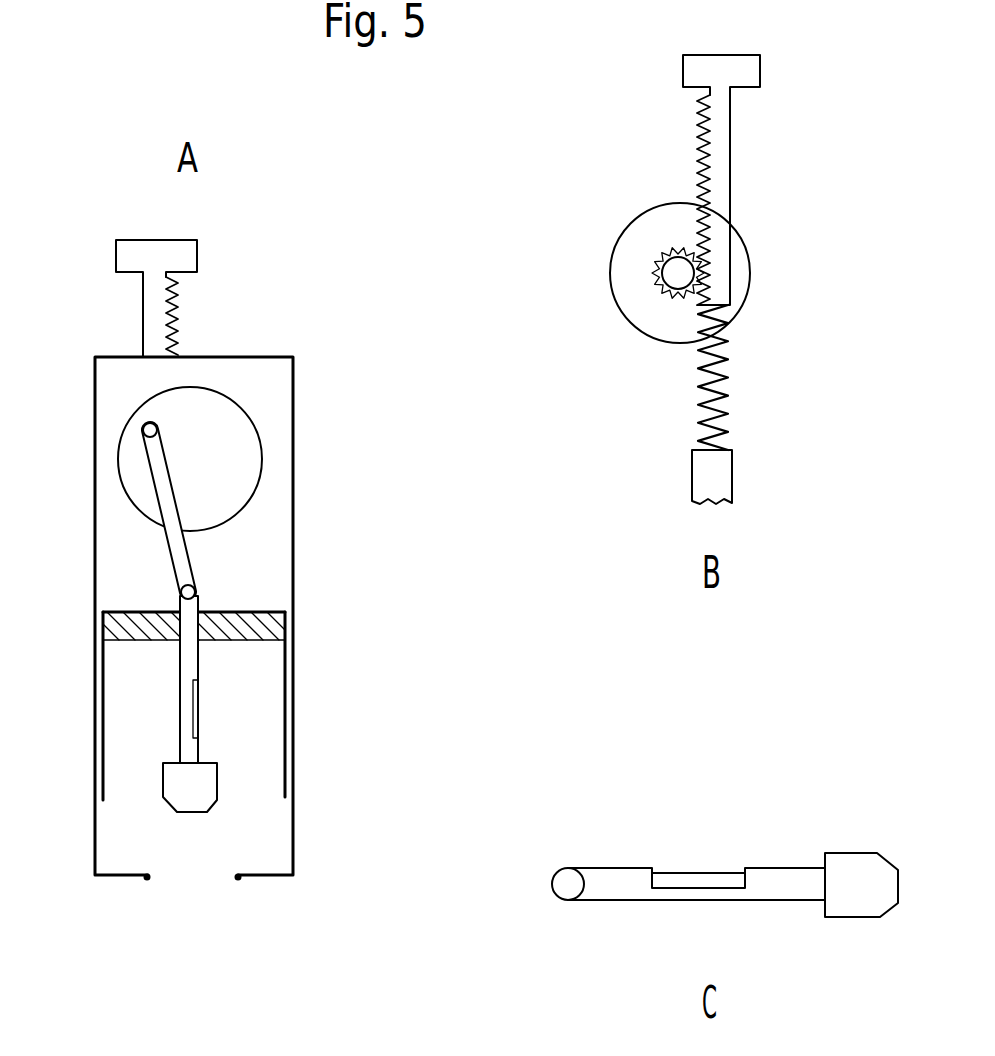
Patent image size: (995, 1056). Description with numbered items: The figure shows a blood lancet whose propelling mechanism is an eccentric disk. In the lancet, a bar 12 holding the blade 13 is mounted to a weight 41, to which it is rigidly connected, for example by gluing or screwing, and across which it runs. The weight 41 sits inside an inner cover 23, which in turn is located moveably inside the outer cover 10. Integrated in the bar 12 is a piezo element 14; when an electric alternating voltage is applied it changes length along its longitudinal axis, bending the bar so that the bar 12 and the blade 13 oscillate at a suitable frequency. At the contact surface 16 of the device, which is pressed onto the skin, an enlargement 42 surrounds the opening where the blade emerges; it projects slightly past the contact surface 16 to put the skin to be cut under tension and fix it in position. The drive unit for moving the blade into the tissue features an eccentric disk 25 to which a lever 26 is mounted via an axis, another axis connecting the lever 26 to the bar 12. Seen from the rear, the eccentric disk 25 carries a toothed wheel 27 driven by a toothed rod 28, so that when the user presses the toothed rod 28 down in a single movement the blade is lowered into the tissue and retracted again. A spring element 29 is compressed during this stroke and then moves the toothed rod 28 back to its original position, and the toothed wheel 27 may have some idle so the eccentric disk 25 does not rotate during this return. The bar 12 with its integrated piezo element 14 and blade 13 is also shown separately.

The outer cover 10 is at (295, 375).
The bar 12 is at (185, 658).
The blade 13 is at (202, 802).
The piezo element 14 is at (195, 715).
The contact surface 16 is at (120, 877).
The inner cover 23 is at (285, 707).
The eccentric disk 25 is at (250, 448).
The lever 26 is at (185, 565).
The toothed wheel 27 is at (665, 250).
The toothed rod 28 is at (718, 140).
The spring element 29 is at (720, 410).
The weight 41 is at (125, 625).
The enlargement 42 is at (240, 877).